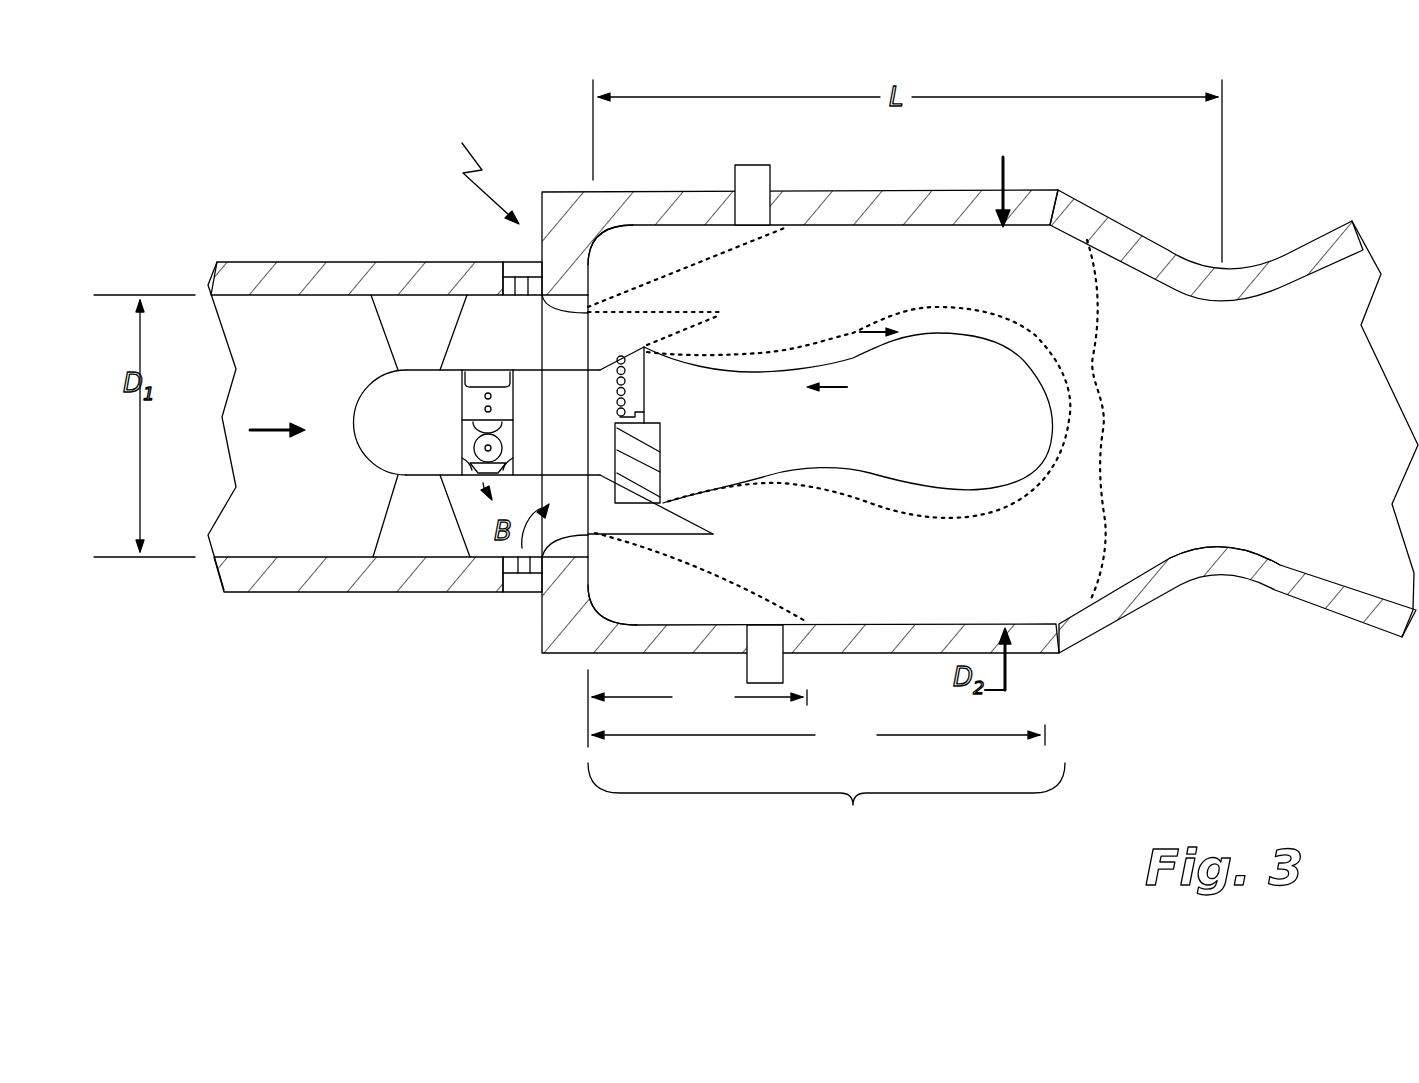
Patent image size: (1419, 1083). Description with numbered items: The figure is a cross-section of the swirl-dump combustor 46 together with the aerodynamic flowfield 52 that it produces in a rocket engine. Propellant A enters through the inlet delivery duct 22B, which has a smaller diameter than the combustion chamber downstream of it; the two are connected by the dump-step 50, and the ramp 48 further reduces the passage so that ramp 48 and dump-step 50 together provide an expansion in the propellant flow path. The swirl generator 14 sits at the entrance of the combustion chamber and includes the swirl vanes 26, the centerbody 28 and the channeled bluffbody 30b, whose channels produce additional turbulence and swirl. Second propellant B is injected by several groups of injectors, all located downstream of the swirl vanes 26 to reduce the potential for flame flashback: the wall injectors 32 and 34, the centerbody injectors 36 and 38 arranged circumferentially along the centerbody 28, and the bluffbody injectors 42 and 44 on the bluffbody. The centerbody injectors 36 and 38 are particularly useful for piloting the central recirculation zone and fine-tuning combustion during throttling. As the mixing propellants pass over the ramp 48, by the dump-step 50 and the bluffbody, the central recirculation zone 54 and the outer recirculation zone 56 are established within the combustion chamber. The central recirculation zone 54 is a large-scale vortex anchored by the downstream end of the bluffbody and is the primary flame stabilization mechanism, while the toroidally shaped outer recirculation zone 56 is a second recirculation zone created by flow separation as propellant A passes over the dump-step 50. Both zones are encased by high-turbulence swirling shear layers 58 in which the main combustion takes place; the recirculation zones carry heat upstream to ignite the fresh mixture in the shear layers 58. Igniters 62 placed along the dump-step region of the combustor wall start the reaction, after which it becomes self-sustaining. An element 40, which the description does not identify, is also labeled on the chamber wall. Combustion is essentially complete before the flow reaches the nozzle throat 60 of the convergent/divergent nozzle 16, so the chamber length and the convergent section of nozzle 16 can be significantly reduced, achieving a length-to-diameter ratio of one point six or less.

The swirl generator 14 is at (340, 372).
The convergent/divergent nozzle 16 is at (1110, 620).
The inlet delivery duct 22B is at (299, 583).
The swirl vanes 26 is at (381, 530).
The centerbody 28 is at (581, 423).
The channeled bluffbody 30b is at (636, 469).
The wall injector 32 is at (513, 262).
The wall injector 34 is at (518, 593).
The centerbody injector 36 is at (478, 370).
The centerbody injector 38 is at (512, 452).
The combustor liner 40 is at (900, 212).
The bluffbody injector 42 is at (640, 363).
The bluffbody injector 44 is at (640, 405).
The swirl-dump combustor 46 is at (478, 171).
The ramp 48 is at (560, 318).
The dump-step 50 is at (588, 297).
The aerodynamic flowfield 52 is at (847, 540).
The CRZ 54 is at (1000, 442).
The ORZ 56 is at (722, 600).
The shear layers 58 is at (1087, 233).
The nozzle throat 60 is at (1212, 562).
The igniters 62 is at (770, 180).